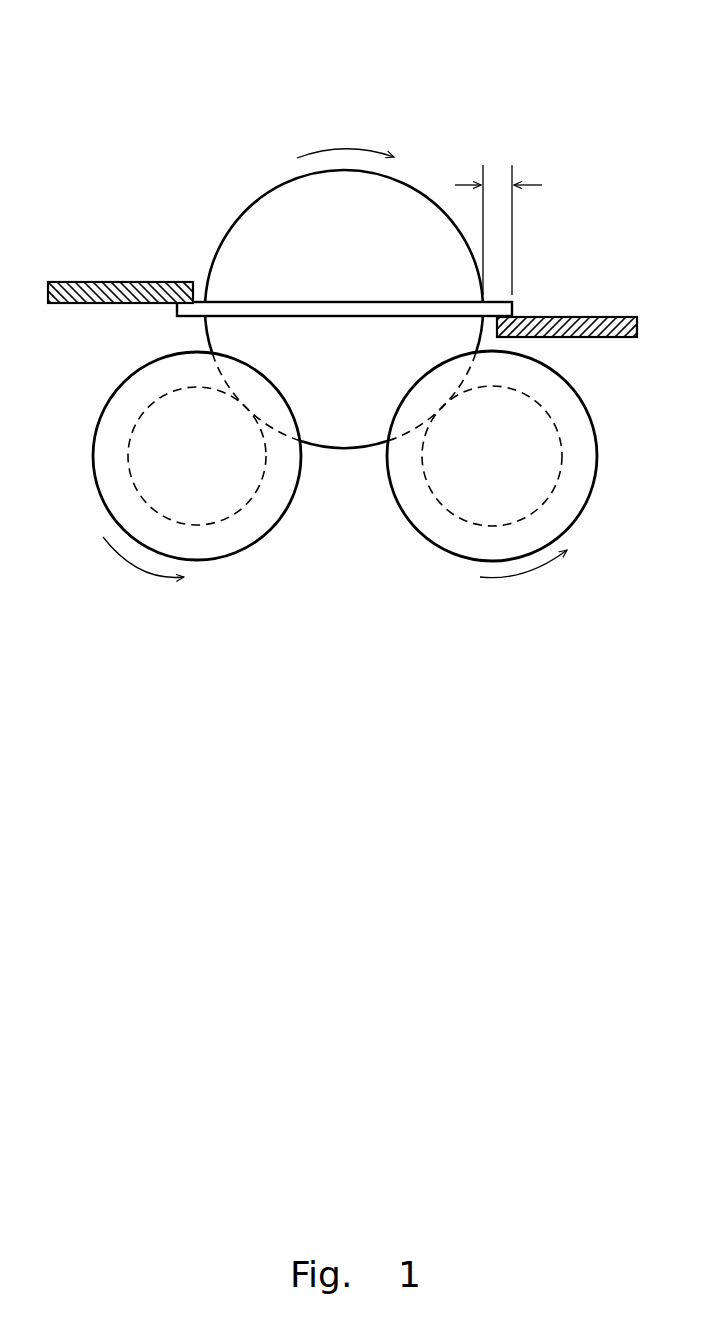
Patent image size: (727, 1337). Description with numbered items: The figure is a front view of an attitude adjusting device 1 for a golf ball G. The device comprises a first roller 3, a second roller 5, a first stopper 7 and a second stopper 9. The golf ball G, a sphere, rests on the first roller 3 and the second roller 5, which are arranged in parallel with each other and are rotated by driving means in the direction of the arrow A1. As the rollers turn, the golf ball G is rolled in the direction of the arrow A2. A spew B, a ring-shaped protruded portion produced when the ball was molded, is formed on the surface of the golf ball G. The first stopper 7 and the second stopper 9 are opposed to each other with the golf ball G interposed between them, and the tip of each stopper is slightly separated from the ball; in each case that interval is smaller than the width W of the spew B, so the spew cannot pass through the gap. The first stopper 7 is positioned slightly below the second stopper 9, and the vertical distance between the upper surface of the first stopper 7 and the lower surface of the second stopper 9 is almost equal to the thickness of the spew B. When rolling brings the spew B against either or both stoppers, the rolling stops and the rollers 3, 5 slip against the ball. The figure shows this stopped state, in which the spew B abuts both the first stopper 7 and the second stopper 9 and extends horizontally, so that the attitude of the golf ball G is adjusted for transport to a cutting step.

The attitude adjusting device 1 is at (560, 113).
The first roller 3 is at (463, 540).
The second roller 5 is at (210, 545).
The first stopper 7 is at (590, 320).
The second stopper 9 is at (103, 292).
The golf ball G is at (240, 250).
The spew B is at (322, 303).
The width of the spew W is at (514, 230).
The arrow (direction of roller rotation) A1 is at (330, 570).
The arrow (direction of golf ball rolling) A2 is at (345, 139).